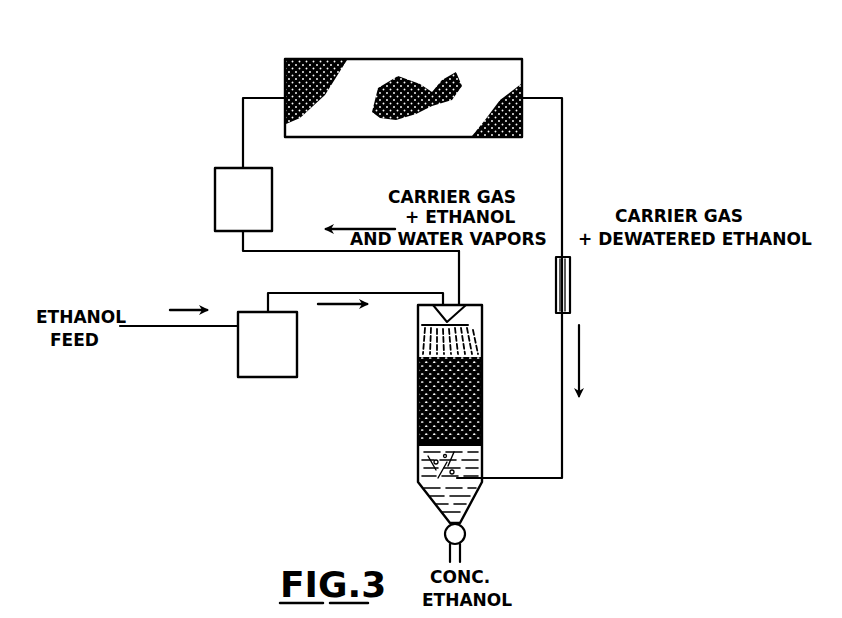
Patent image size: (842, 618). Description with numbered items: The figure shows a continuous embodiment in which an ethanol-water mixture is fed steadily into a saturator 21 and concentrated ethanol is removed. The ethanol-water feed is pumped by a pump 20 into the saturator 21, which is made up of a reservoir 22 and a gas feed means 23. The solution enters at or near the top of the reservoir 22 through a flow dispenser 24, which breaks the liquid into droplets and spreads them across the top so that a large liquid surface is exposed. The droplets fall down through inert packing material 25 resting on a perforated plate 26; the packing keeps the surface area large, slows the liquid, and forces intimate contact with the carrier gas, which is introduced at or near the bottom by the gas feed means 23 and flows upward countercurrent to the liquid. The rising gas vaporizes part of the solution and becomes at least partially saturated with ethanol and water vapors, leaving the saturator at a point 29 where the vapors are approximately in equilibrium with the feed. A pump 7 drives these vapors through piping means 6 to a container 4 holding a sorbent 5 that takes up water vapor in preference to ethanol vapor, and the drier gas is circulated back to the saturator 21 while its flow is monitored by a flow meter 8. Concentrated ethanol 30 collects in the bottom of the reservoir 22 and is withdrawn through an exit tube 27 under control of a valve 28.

The container 4 is at (402, 59).
The sorbent 5 is at (450, 76).
The piping means 6 is at (562, 192).
The pump 7 is at (215, 190).
The flow meter 8 is at (570, 286).
The pump 20 is at (297, 356).
The saturator 21 is at (452, 408).
The reservoir 22 is at (482, 340).
The gas feed means 23 is at (470, 470).
The flow dispenser 24 is at (466, 312).
The inert packing material 25 is at (470, 382).
The perforated plate 26 is at (482, 446).
The exit tube 27 is at (462, 554).
The valve 28 is at (466, 530).
The point 29 is at (485, 278).
The concentrated ethanol 30 is at (468, 496).